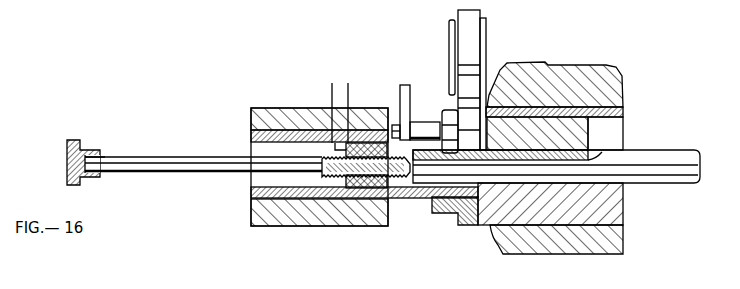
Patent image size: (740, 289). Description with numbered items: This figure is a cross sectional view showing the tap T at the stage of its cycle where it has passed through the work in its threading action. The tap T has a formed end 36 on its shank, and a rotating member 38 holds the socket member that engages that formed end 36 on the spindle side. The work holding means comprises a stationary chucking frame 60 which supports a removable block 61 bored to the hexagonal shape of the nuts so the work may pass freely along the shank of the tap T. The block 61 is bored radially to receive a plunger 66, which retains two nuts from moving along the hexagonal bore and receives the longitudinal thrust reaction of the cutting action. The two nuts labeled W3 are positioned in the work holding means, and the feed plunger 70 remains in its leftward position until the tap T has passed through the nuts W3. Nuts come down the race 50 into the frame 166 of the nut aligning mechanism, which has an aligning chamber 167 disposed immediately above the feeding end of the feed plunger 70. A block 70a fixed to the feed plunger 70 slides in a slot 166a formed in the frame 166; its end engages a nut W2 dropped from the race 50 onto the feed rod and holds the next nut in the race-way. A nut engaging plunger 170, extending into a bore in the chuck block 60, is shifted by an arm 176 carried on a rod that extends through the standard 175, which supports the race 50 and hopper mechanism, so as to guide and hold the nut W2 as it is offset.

The rotating member 38 is at (80, 142).
The formed end 36 is at (100, 160).
The tap T is at (197, 158).
The chucking frame 60 is at (265, 226).
The block 61 is at (251, 193).
The plunger 66 is at (326, 100).
The nuts W3 is at (371, 190).
The arm 176 is at (400, 98).
The plunger 170 is at (425, 128).
The nut W2 is at (447, 117).
The race 50 is at (486, 33).
The aligning chamber 167 is at (507, 68).
The block 70a is at (610, 103).
The slot 166a is at (607, 130).
The feed plunger 70 is at (668, 160).
The frame 166 is at (614, 205).
The standard 175 is at (614, 238).